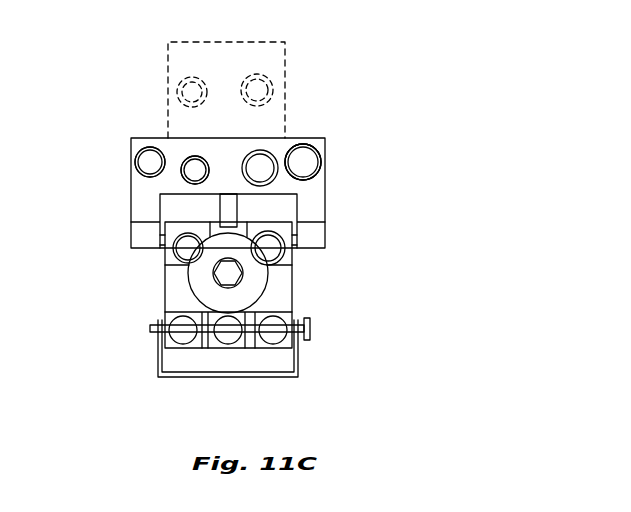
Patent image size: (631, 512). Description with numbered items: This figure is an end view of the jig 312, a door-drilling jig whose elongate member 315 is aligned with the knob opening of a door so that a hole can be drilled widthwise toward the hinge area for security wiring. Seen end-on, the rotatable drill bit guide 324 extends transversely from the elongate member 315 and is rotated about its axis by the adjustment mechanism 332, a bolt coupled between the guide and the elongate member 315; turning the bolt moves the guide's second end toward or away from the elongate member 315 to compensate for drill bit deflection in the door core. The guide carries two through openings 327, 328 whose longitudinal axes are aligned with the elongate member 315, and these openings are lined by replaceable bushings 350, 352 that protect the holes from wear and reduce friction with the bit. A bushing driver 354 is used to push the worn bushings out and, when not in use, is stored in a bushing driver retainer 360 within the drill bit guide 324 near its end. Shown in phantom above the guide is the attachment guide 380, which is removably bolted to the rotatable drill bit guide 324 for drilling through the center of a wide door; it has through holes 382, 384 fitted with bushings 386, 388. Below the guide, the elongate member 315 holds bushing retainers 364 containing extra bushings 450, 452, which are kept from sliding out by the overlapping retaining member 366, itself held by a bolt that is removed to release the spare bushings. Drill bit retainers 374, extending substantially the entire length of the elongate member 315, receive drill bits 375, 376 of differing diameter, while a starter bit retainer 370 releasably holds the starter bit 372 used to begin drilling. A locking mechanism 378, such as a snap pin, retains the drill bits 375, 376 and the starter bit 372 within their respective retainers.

The jig 312 is at (404, 105).
The elongate member 315 is at (165, 299).
The rotatable drill bit guide 324 is at (137, 212).
The through opening 327 is at (198, 156).
The through opening 328 is at (290, 148).
The adjustment mechanism 332 is at (222, 206).
The bushing 350 is at (185, 156).
The bushing 352 is at (272, 152).
The bushing driver 354 is at (150, 158).
The bushing driver retainer 360 is at (135, 161).
The bushing retainer 364 is at (176, 267).
The retaining member 366 is at (253, 292).
The starter bit retainer 370 is at (208, 344).
The starter bit 372 is at (231, 342).
The drill bit retainer 374 is at (166, 311).
The drill bit 375 is at (164, 345).
The drill bit 376 is at (275, 343).
The locking mechanism 378 is at (308, 328).
The attachment guide 380 is at (240, 50).
The through hole 382 is at (180, 78).
The through hole 384 is at (270, 76).
The bushing 386 is at (197, 77).
The bushing 388 is at (290, 100).
The extra bushing 450 is at (172, 252).
The extra bushing 452 is at (290, 250).